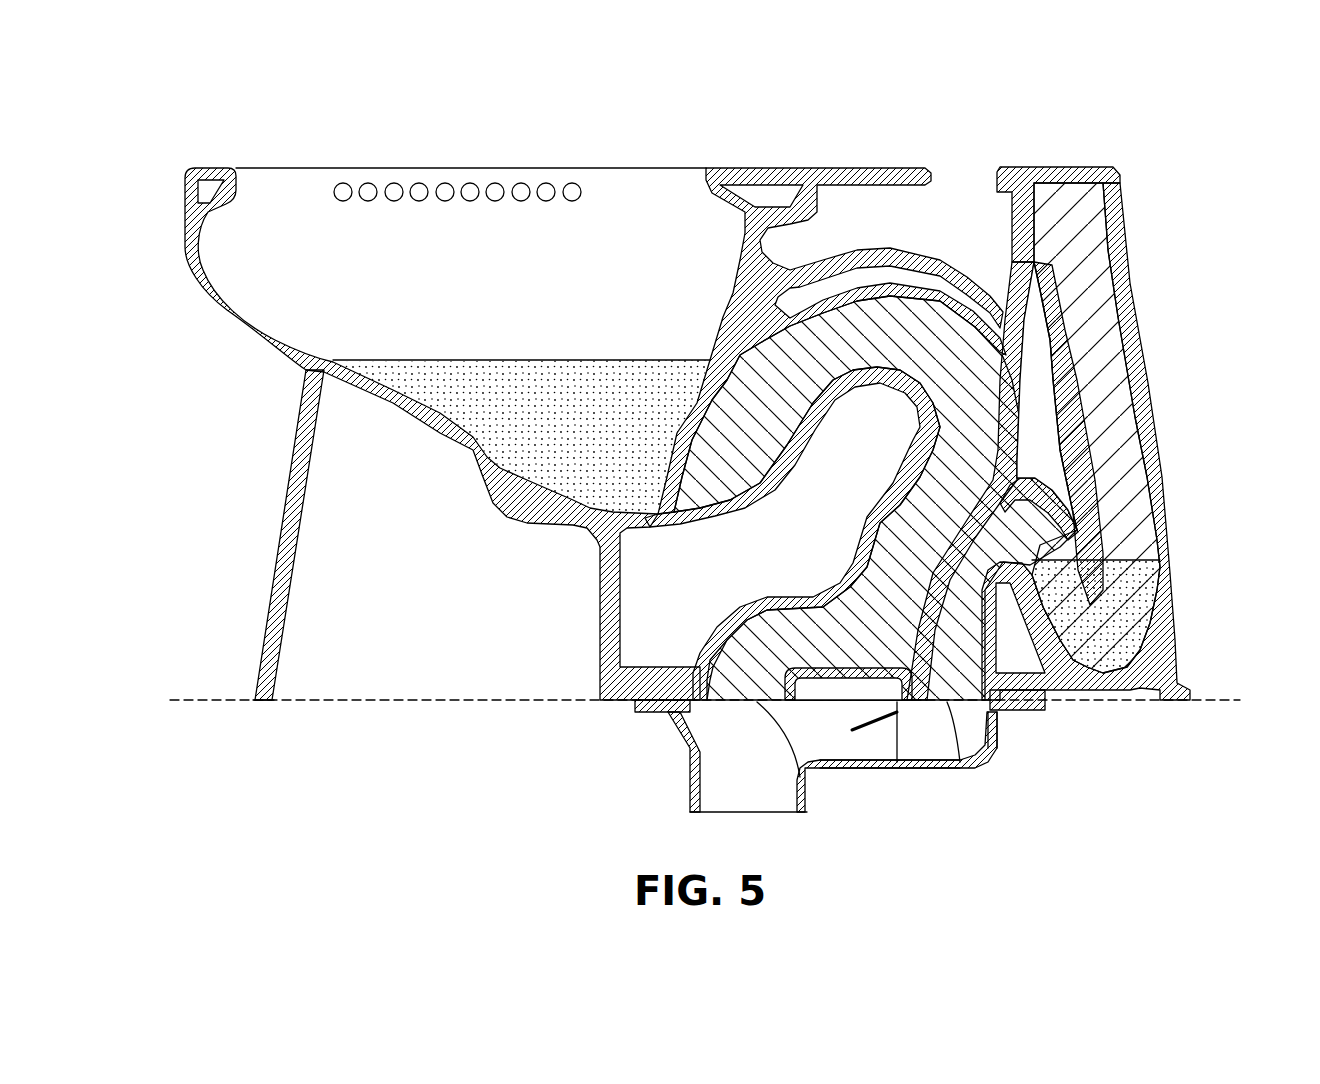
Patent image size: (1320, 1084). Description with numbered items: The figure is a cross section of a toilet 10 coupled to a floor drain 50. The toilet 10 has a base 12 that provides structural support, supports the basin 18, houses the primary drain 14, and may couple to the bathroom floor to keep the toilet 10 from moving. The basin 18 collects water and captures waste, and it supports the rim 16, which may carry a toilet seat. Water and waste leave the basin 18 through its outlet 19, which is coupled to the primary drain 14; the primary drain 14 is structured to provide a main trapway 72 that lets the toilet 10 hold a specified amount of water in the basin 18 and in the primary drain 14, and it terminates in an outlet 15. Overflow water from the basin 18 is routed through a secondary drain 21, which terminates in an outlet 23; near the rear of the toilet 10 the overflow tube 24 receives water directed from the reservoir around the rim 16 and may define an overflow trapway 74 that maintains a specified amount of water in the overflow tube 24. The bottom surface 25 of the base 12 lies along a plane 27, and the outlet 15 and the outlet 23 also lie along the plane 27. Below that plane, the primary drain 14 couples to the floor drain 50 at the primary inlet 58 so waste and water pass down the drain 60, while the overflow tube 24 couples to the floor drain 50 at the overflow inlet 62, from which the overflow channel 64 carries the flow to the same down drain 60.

The toilet 10 is at (1143, 163).
The base 12 is at (280, 567).
The primary drain 14 is at (870, 555).
The outlet 15 is at (805, 778).
The rim 16 is at (213, 165).
The basin 18 is at (213, 305).
The outlet 19 is at (645, 495).
The secondary drain 21 is at (975, 648).
The outlet 23 is at (948, 702).
The overflow tube 24 is at (1108, 385).
The bottom surface 25 is at (262, 700).
The plane 27 is at (200, 705).
The floor drain 50 is at (837, 774).
The primary inlet 58 is at (700, 730).
The down drain 60 is at (710, 787).
The overflow inlet 62 is at (970, 732).
The overflow channel 64 is at (838, 750).
The main trapway 72 is at (805, 410).
The overflow trapway 74 is at (1150, 600).